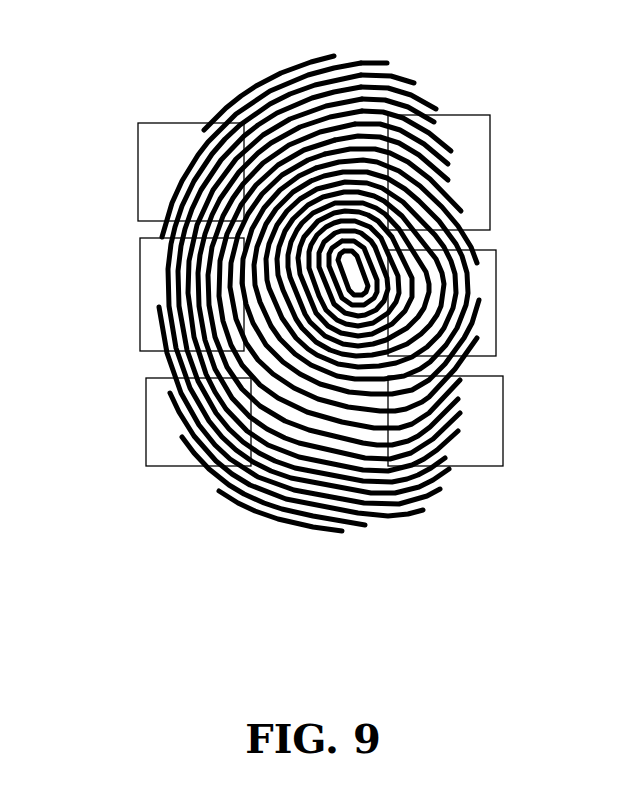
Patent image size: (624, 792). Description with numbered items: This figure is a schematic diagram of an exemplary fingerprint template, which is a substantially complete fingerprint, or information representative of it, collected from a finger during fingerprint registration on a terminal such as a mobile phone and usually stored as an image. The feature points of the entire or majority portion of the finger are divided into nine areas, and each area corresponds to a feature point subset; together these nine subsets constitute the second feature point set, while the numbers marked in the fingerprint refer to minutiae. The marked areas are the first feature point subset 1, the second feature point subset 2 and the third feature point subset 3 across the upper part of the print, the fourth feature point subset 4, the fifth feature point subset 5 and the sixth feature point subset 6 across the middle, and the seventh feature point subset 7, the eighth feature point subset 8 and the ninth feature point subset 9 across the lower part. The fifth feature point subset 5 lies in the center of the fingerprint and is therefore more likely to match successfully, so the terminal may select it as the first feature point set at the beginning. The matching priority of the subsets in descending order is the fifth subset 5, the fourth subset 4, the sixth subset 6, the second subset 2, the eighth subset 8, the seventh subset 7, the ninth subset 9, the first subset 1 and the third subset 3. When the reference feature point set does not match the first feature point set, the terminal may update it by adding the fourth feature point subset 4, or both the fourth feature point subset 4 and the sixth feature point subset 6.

The first feature point subset 1 is at (130, 172).
The second feature point subset 2 is at (345, 150).
The third feature point subset 3 is at (482, 163).
The fourth feature point subset 4 is at (132, 297).
The fifth feature point subset 5 is at (372, 445).
The sixth feature point subset 6 is at (488, 302).
The seventh feature point subset 7 is at (138, 415).
The eighth feature point subset 8 is at (335, 430).
The ninth feature point subset 9 is at (495, 426).